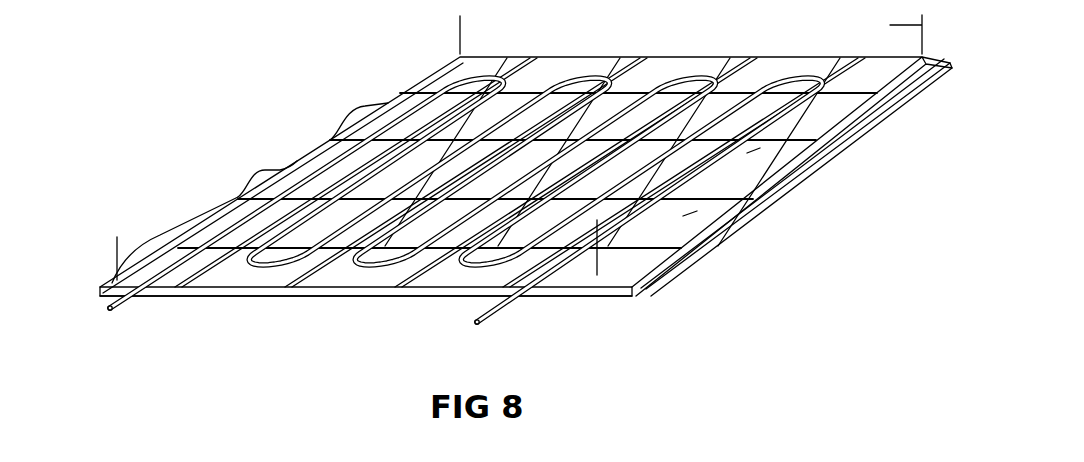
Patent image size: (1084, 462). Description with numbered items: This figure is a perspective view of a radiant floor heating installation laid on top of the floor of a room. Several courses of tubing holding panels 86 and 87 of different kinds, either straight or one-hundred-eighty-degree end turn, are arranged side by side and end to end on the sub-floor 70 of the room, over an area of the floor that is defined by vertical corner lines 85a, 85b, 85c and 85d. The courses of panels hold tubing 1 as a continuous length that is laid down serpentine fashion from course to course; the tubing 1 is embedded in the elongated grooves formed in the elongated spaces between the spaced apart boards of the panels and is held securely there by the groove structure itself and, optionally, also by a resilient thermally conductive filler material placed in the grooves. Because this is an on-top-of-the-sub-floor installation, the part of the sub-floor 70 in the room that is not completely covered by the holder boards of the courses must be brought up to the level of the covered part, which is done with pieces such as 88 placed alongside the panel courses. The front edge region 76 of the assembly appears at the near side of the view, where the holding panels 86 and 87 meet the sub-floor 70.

The tubing 1 is at (113, 311).
The sub-floor 70 is at (813, 173).
The front lip 76 is at (213, 278).
The vertical corner line 85a is at (118, 237).
The vertical corner line 85b is at (460, 18).
The vertical corner line 85c is at (898, 34).
The plate corner 85d is at (600, 262).
The tubing holding panels 86 is at (393, 110).
The tubing holding panels 87 is at (522, 66).
The pieces 88 is at (878, 82).